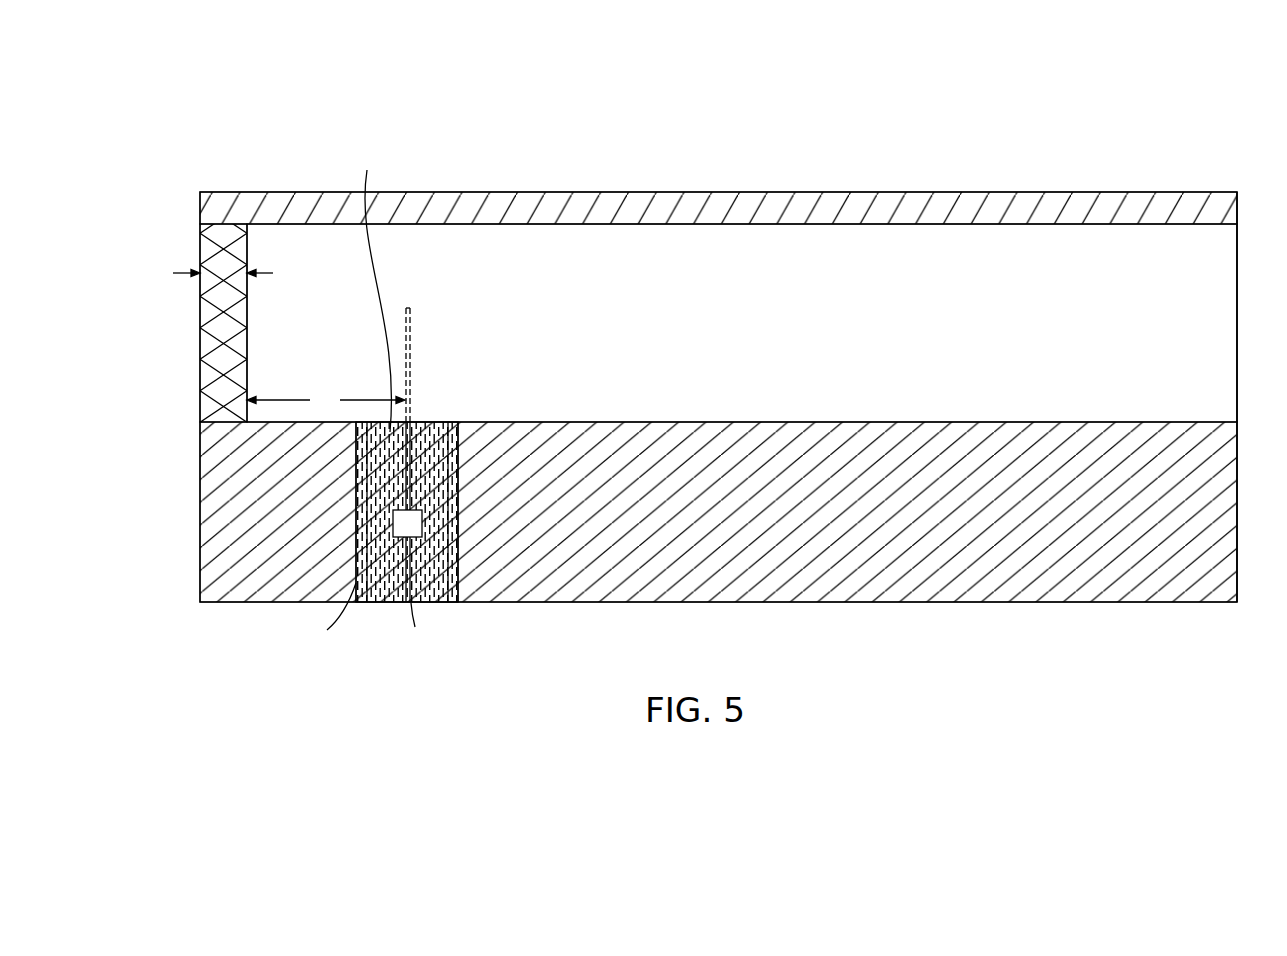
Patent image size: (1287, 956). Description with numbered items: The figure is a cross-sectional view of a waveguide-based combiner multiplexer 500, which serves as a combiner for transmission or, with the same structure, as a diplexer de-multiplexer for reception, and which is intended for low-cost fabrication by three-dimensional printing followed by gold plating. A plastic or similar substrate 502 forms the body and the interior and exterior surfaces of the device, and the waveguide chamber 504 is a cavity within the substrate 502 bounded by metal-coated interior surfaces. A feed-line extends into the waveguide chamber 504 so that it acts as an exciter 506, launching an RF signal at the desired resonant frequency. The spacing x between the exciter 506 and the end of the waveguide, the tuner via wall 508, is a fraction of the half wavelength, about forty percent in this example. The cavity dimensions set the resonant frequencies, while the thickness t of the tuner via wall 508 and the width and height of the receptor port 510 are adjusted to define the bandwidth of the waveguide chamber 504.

The combiner multiplexer 500 is at (1047, 88).
The substrate 502 is at (975, 573).
The waveguide chamber 504 is at (775, 260).
The exciter 506 is at (408, 308).
The tuner via wall 508 is at (277, 309).
The receptor port 510 is at (1237, 252).